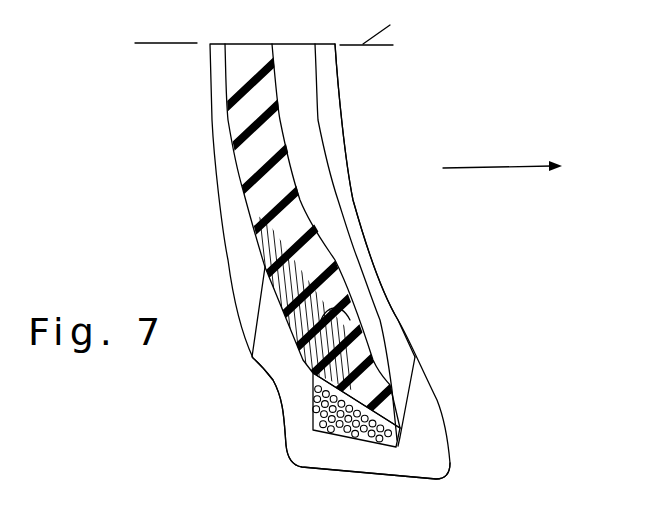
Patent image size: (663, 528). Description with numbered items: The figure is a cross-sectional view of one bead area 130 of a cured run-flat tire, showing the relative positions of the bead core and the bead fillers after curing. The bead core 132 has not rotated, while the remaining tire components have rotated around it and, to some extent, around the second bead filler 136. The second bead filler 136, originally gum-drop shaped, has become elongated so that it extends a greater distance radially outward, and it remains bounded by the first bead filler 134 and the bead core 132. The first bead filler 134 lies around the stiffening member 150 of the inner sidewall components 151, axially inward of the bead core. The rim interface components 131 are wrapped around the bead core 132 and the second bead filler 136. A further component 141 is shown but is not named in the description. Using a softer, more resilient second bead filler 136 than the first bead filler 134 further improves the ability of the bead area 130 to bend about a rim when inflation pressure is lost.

The bead area 130 is at (414, 269).
The rim interface components 131 is at (297, 433).
The bead core 132 is at (400, 437).
The first bead filler 134 is at (255, 157).
The second bead filler 136 is at (356, 323).
The outer wall 141 is at (200, 83).
The stiffening member 150 is at (336, 129).
The inner sidewall components 151 is at (352, 85).